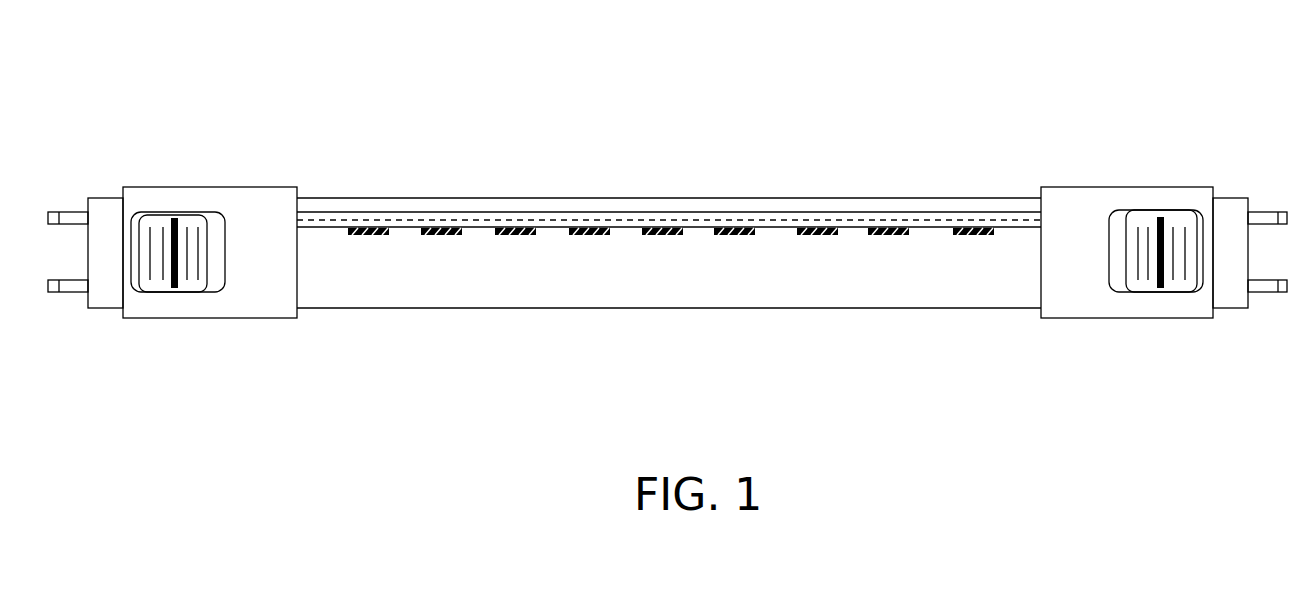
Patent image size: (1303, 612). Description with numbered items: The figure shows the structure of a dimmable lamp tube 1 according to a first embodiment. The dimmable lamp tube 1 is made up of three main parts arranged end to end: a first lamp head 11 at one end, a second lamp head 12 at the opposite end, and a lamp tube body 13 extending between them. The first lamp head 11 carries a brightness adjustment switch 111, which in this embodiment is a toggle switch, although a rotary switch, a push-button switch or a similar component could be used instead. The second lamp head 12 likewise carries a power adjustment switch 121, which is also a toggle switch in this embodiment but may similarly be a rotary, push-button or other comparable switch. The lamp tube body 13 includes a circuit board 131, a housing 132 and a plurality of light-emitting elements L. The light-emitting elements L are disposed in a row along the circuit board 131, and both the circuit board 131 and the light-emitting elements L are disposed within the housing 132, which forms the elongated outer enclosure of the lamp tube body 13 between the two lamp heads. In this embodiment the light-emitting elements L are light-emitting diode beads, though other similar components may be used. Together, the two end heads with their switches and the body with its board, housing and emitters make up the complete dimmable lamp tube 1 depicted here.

The dimmable lamp tube 1 is at (376, 142).
The first lamp head 11 is at (228, 193).
The brightness adjustment switch 111 is at (160, 218).
The second lamp head 12 is at (1165, 200).
The power adjustment switch 121 is at (1150, 220).
The lamp tube body 13 is at (772, 243).
The circuit board 131 is at (538, 220).
The housing 132 is at (682, 198).
The light-emitting elements L is at (593, 230).